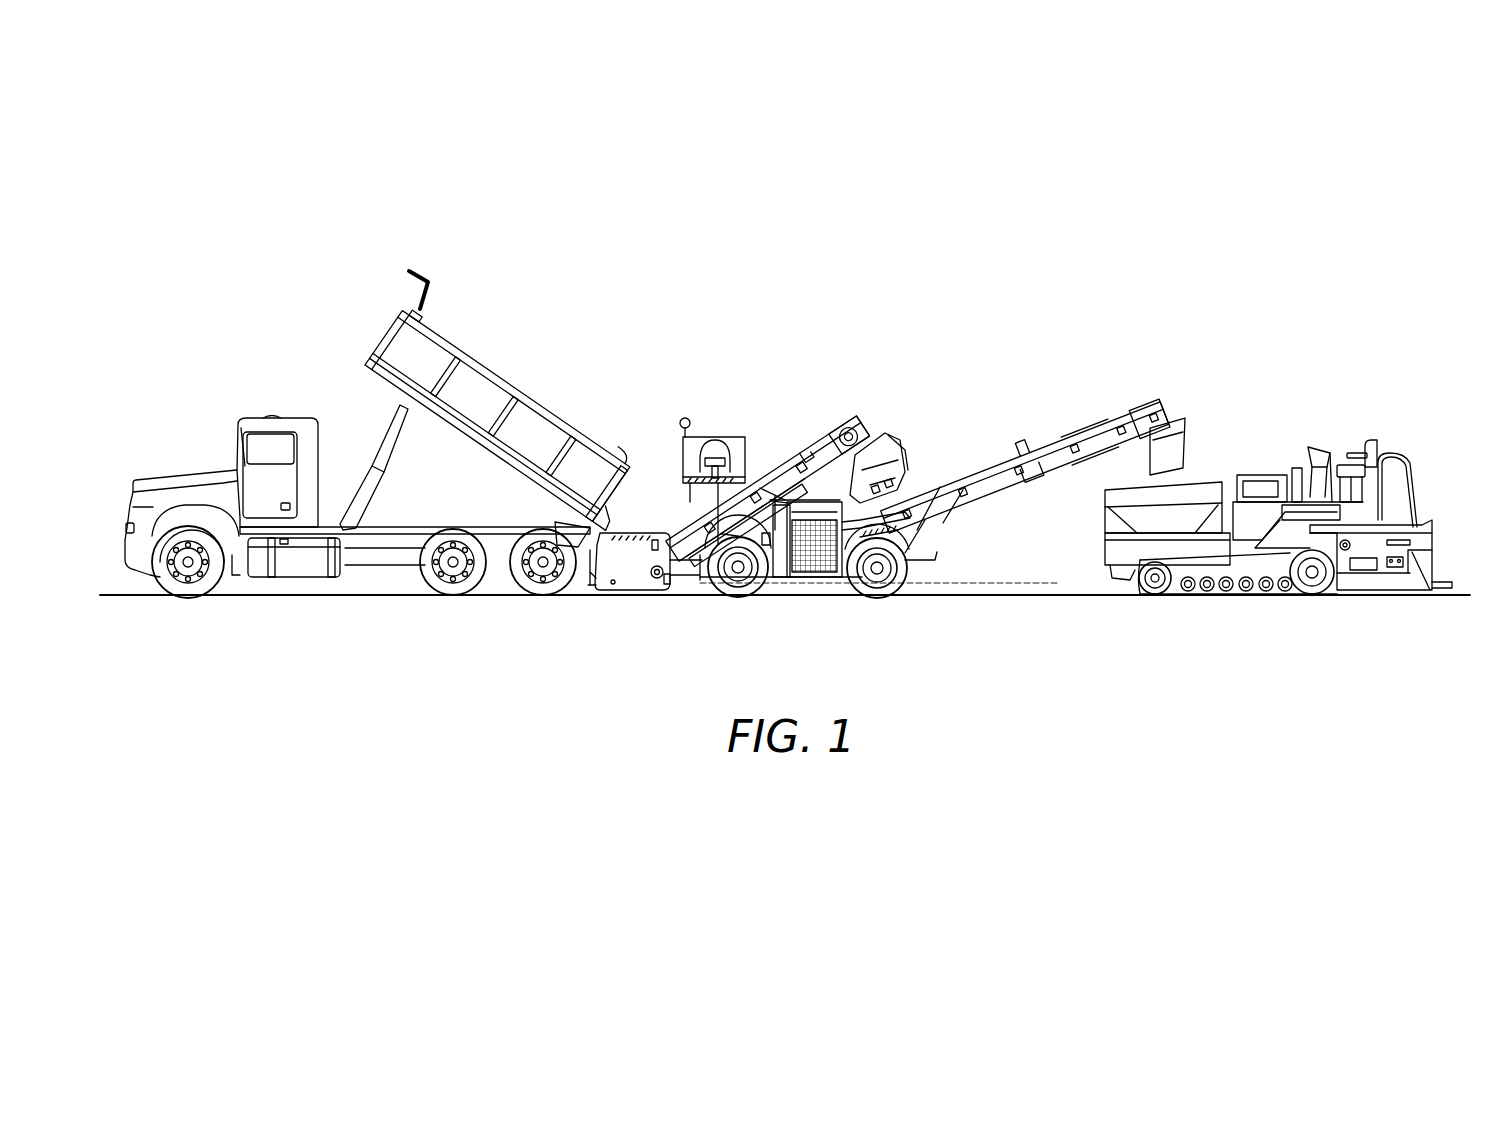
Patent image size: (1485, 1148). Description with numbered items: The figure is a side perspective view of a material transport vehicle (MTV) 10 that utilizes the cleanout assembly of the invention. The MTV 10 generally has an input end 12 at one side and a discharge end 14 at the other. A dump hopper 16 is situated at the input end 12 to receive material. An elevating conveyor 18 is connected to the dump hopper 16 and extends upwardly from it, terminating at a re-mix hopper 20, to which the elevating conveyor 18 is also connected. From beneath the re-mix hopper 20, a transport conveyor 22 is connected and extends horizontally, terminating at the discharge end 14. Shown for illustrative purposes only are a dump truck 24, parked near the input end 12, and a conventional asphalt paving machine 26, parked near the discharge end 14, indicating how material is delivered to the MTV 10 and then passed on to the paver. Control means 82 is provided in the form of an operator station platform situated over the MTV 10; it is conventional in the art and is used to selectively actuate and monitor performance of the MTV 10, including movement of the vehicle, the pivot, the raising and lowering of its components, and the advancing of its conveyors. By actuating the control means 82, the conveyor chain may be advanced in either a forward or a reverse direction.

The material transport vehicle 10 is at (868, 344).
The input end 12 is at (645, 616).
The discharge end 14 is at (1178, 384).
The dump hopper 16 is at (618, 575).
The elevating conveyor 18 is at (805, 452).
The re-mix hopper 20 is at (896, 473).
The transport conveyor 22 is at (1075, 438).
The dump truck 24 is at (226, 362).
The asphalt paving machine 26 is at (1340, 390).
The control means 82 is at (716, 440).